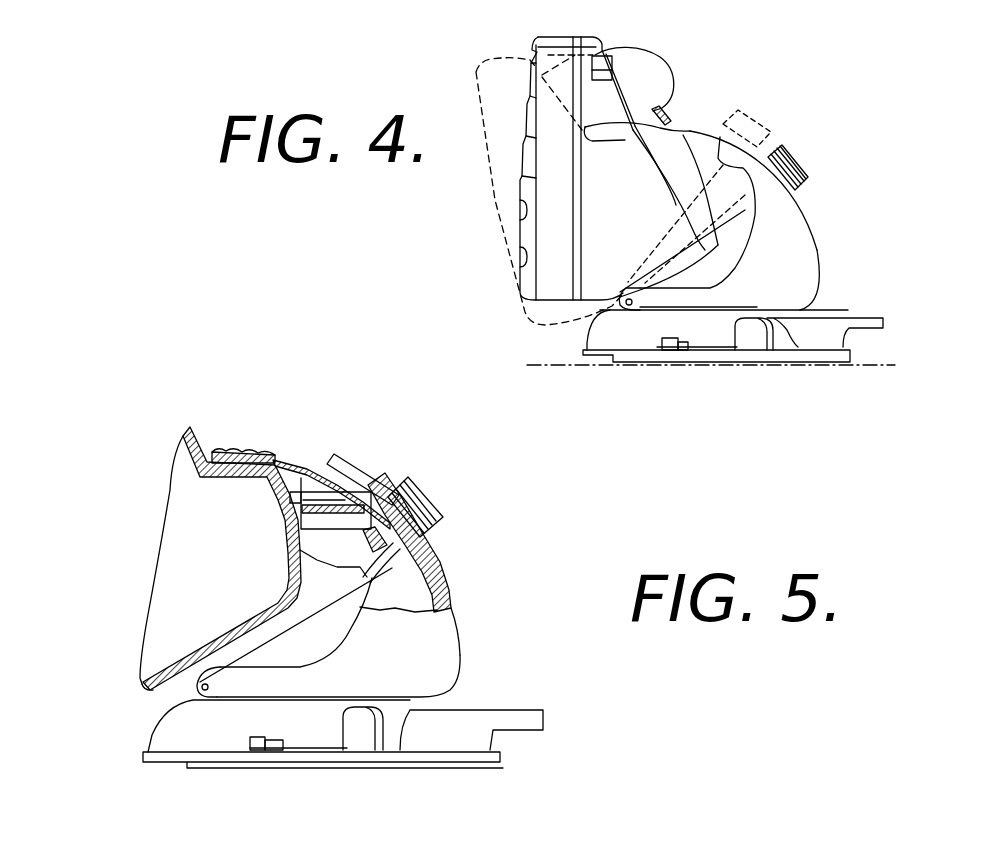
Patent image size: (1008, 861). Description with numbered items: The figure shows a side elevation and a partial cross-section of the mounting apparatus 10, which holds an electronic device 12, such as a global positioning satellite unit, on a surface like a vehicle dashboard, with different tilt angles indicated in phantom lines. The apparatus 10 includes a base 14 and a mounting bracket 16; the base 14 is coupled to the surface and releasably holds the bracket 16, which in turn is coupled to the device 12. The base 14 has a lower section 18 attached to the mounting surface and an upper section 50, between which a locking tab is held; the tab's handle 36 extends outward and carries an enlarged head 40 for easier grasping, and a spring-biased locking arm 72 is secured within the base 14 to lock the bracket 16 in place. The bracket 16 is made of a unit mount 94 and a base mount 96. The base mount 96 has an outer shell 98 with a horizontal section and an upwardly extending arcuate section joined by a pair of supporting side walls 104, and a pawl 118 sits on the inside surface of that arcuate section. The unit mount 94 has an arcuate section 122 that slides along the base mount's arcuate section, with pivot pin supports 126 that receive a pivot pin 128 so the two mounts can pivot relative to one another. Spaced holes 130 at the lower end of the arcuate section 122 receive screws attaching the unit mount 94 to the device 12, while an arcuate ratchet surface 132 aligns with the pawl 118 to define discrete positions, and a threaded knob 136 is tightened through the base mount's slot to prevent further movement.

In FIG. 5, the mounting apparatus 10 is at (335, 651).
In FIG. 4, the electronic device 12 is at (587, 35).
In FIG. 5, the electronic device 12 is at (193, 423).
In FIG. 4, the base 14 is at (696, 371).
In FIG. 5, the base 14 is at (271, 758).
In FIG. 4, the mounting bracket 16 is at (767, 220).
In FIG. 5, the mounting bracket 16 is at (378, 591).
In FIG. 4, the lower section 18 is at (853, 348).
In FIG. 5, the lower section 18 is at (150, 752).
In FIG. 4, the handle 36 is at (705, 348).
In FIG. 5, the handle 36 is at (313, 745).
In FIG. 4, the enlarged head 40 is at (748, 340).
In FIG. 5, the enlarged head 40 is at (362, 740).
In FIG. 4, the upper section 50 is at (613, 350).
In FIG. 5, the upper section 50 is at (160, 733).
In FIG. 4, the locking arm 72 is at (883, 319).
In FIG. 5, the locking arm 72 is at (543, 713).
In FIG. 4, the unit mount 94 is at (693, 125).
In FIG. 5, the unit mount 94 is at (277, 458).
In FIG. 4, the base mount 96 is at (820, 250).
In FIG. 5, the base mount 96 is at (453, 618).
In FIG. 4, the outer shell 98 is at (790, 270).
In FIG. 5, the outer shell 98 is at (450, 645).
In FIG. 4, the supporting side walls 104 is at (797, 227).
In FIG. 5, the supporting side walls 104 is at (440, 680).
In FIG. 5, the pawl 118 is at (360, 477).
In FIG. 5, the arcuate section 122 is at (230, 447).
In FIG. 5, the pivot pin supports 126 is at (150, 684).
In FIG. 5, the pivot pin 128 is at (203, 683).
In FIG. 5, the spaced holes 130 is at (314, 478).
In FIG. 5, the arcuate ratchet surface 132 is at (303, 490).
In FIG. 4, the threaded knob 136 is at (795, 150).
In FIG. 5, the threaded knob 136 is at (428, 487).